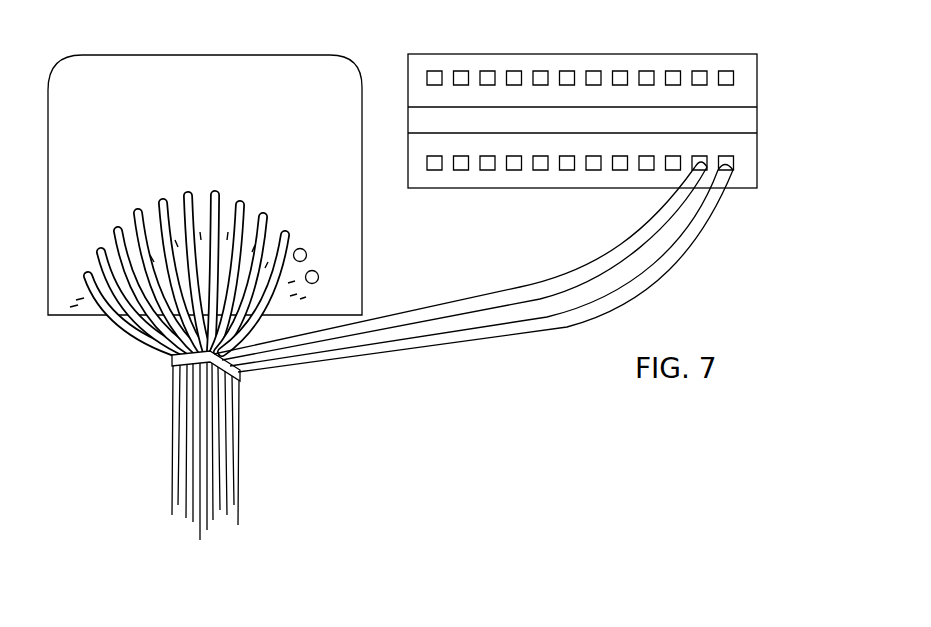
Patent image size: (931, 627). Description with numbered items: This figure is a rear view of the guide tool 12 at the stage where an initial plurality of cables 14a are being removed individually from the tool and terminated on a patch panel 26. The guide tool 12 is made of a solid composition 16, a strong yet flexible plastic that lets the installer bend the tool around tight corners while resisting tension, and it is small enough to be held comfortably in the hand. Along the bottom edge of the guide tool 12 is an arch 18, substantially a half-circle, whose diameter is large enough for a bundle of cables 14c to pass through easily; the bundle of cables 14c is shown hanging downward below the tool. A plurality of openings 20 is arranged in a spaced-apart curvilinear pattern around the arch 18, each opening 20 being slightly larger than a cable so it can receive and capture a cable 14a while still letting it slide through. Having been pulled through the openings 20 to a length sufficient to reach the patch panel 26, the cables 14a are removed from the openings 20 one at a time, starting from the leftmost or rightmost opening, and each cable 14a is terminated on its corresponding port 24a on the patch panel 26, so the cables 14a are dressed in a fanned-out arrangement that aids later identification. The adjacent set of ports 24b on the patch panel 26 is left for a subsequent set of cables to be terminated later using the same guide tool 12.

The guide tool 12 is at (392, 246).
The cables 14a is at (260, 320).
The bundle of cables 14c is at (243, 445).
The solid composition 16 is at (121, 104).
The arch 18 is at (226, 240).
The openings 20 is at (307, 257).
The ports 24a is at (702, 154).
The ports 24b is at (726, 96).
The patch panel 26 is at (407, 96).